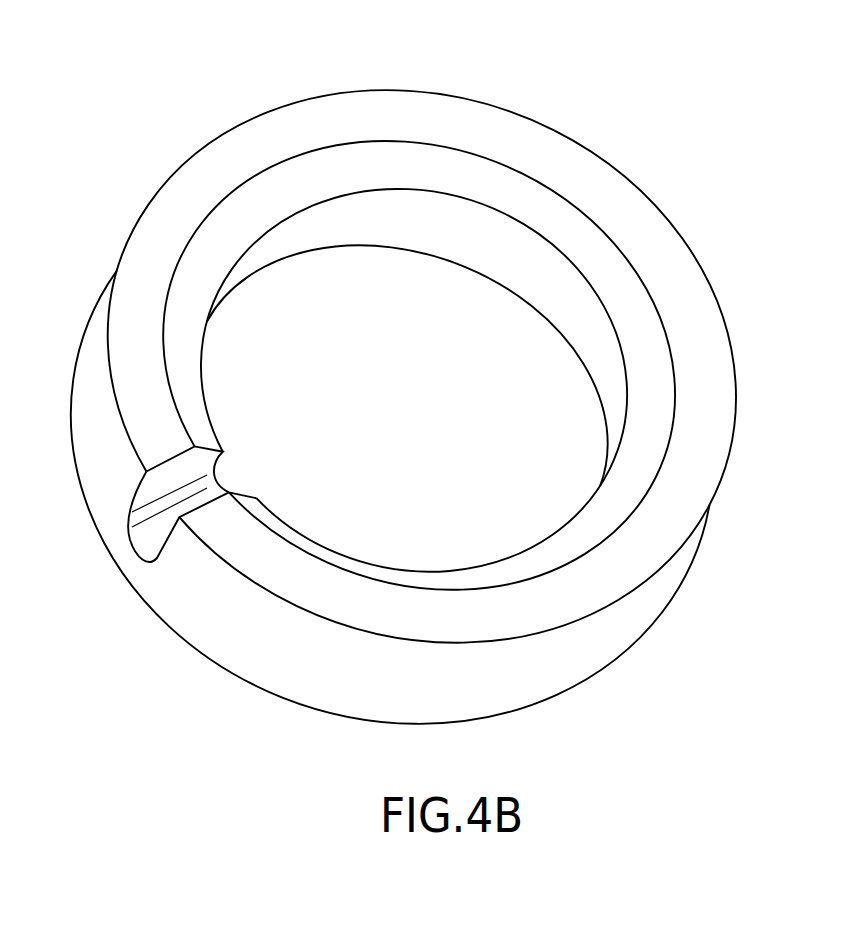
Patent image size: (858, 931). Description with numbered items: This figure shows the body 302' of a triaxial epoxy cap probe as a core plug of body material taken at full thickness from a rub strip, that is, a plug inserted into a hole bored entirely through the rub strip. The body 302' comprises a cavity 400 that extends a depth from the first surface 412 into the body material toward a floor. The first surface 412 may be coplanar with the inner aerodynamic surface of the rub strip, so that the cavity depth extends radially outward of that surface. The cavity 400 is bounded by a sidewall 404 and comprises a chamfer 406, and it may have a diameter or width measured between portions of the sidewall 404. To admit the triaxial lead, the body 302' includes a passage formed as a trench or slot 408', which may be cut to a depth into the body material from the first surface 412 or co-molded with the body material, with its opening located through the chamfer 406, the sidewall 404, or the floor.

The body 302' is at (454, 382).
The first surface 412 is at (647, 227).
The chamfer 406 is at (652, 405).
The sidewall 404 is at (573, 320).
The cavity 400 is at (387, 366).
The trench or slot 408' is at (169, 499).